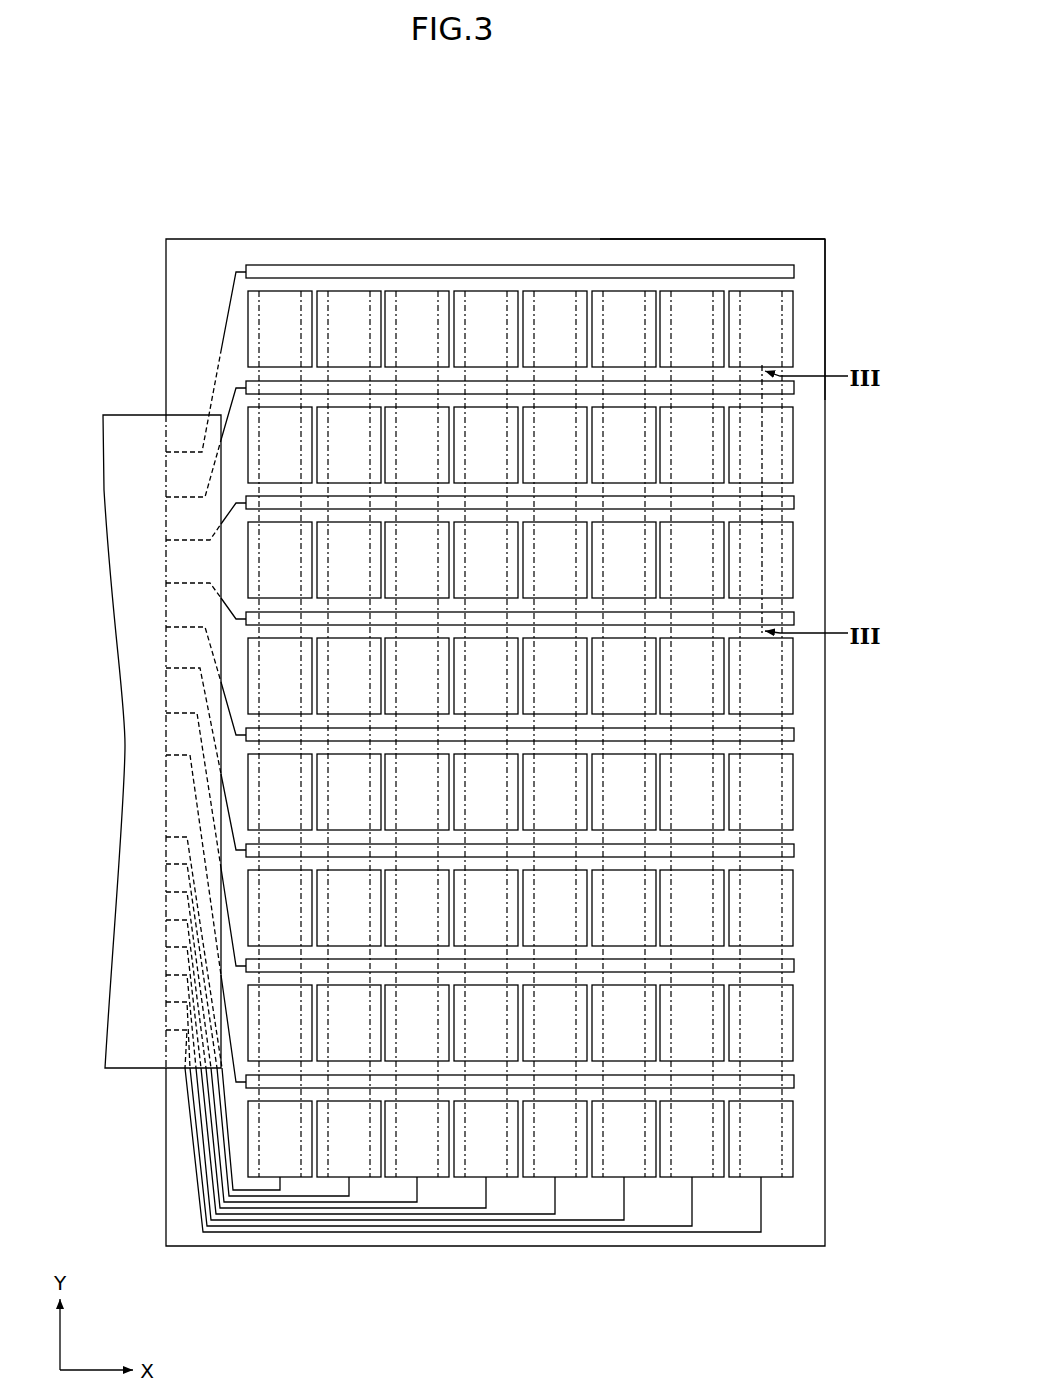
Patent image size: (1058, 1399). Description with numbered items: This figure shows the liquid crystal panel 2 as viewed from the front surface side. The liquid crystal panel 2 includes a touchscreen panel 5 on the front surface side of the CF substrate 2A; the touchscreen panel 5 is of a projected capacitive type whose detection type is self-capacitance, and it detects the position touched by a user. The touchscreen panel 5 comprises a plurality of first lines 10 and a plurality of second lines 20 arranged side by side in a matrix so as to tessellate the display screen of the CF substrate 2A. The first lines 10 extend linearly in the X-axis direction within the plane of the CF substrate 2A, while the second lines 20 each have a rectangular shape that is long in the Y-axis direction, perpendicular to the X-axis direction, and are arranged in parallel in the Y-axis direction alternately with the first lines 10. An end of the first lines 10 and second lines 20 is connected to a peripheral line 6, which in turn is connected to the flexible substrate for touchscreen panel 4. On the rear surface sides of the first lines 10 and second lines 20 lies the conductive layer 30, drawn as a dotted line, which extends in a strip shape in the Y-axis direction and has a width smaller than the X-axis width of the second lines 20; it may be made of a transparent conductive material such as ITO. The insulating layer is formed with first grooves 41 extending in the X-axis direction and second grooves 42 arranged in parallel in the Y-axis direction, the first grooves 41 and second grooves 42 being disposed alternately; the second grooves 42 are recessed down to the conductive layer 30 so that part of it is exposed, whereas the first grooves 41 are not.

The liquid crystal panel 2 is at (534, 166).
The CF substrate 2A is at (715, 238).
The flexible substrate for touchscreen panel 4 is at (134, 425).
The touchscreen panel 5 is at (803, 254).
The peripheral line 6 is at (222, 338).
The first lines 10 is at (796, 965).
The second lines 20 is at (796, 1030).
The conductive layer 30 is at (806, 983).
The first grooves 41 is at (572, 628).
The second grooves 42 is at (571, 672).